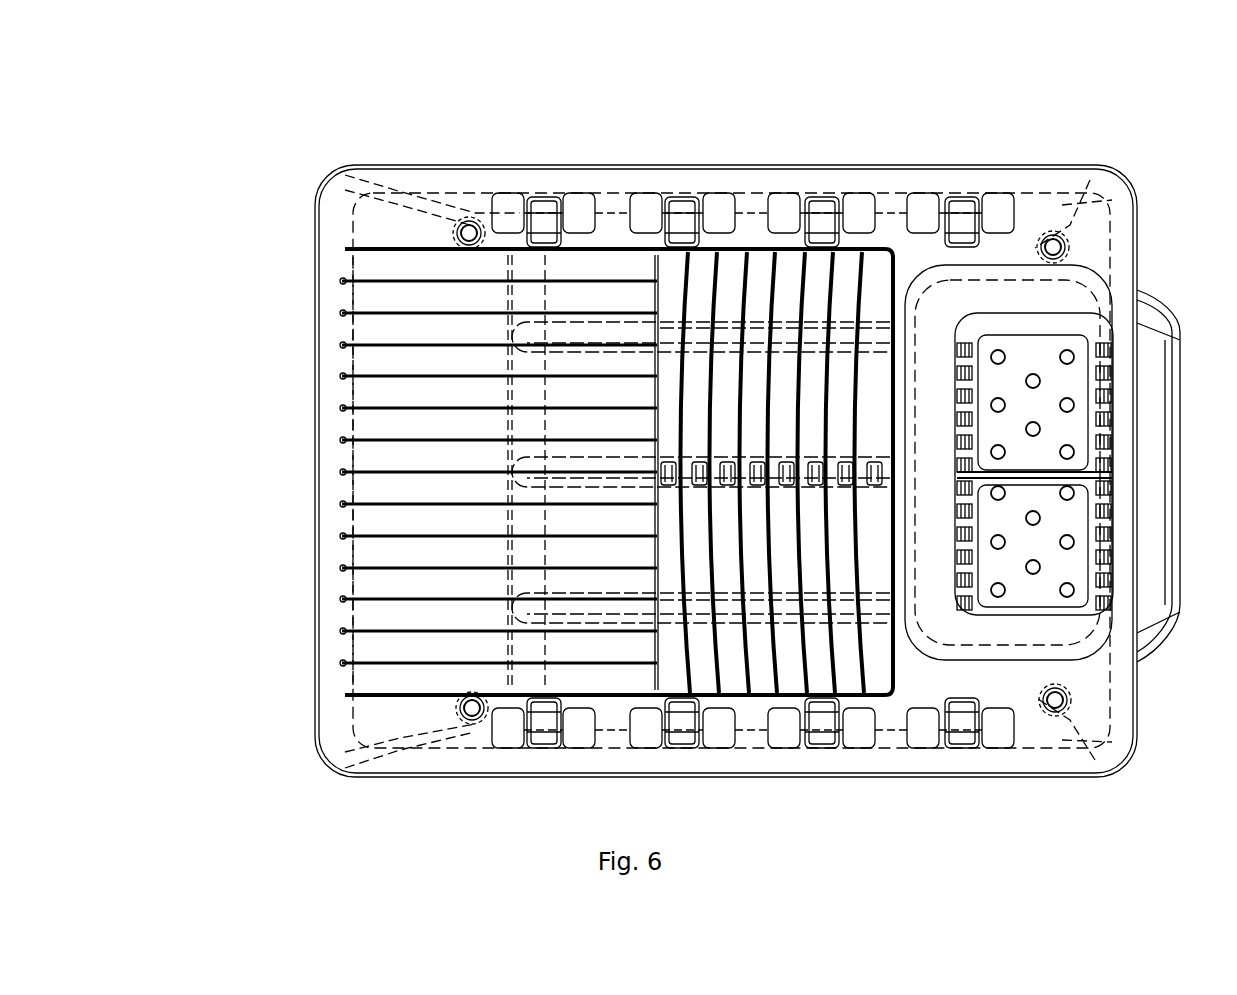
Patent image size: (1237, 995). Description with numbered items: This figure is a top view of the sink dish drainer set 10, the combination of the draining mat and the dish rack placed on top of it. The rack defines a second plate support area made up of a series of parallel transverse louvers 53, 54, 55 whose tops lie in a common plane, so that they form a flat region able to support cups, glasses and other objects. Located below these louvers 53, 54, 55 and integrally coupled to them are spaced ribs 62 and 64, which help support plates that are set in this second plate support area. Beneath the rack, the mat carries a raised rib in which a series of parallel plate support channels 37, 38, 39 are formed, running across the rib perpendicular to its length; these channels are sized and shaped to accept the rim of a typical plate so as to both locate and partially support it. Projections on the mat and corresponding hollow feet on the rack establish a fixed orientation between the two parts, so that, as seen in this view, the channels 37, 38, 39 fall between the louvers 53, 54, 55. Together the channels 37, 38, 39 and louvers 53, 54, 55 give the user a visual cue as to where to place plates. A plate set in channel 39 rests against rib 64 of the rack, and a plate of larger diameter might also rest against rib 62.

The sink dish drainer set 10 is at (694, 459).
The plate support channel 37 is at (877, 475).
The plate support channel 38 is at (842, 483).
The plate support channel 39 is at (810, 472).
The louver 53 is at (867, 268).
The louver 54 is at (837, 268).
The louver 55 is at (807, 267).
The rib 62 is at (692, 340).
The rib 64 is at (752, 590).